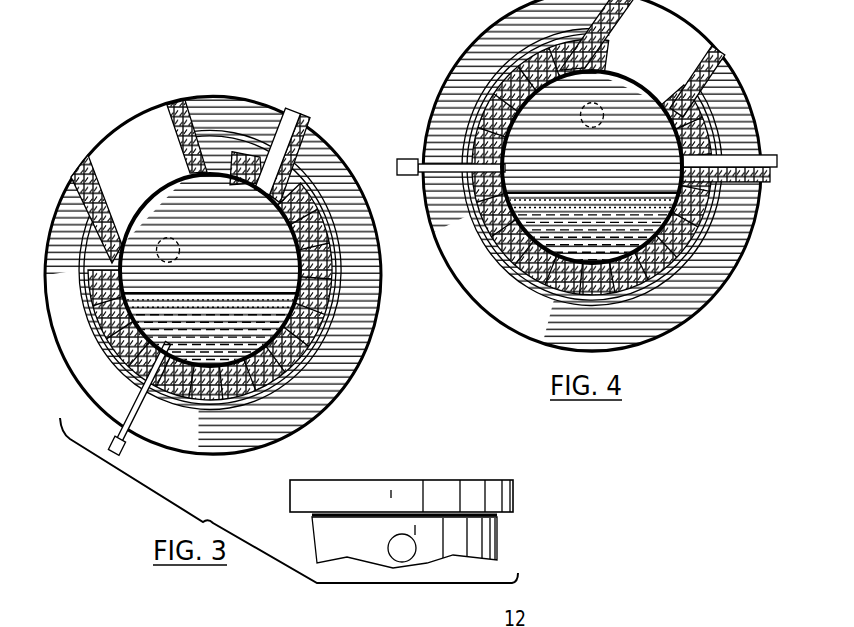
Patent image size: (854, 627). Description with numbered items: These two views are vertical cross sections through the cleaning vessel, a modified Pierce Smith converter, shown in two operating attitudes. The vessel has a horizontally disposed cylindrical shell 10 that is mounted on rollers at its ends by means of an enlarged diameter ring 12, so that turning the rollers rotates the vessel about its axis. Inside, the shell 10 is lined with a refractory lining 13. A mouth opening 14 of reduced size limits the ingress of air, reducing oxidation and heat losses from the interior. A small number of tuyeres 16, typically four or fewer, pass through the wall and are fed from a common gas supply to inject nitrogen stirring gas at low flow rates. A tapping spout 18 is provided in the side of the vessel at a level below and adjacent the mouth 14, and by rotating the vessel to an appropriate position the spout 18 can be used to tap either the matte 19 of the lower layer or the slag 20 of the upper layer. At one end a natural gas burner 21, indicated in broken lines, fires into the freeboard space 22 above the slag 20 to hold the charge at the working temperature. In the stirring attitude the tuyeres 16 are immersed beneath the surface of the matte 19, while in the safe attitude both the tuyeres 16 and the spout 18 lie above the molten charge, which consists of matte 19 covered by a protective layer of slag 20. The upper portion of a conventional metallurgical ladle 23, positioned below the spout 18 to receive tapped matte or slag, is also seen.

In FIG. 3, the cylindrical shell 10 is at (92, 318).
In FIG. 4, the cylindrical shell 10 is at (462, 130).
In FIG. 3, the enlarged diameter ring 12 is at (323, 372).
In FIG. 4, the enlarged diameter ring 12 is at (735, 233).
In FIG. 3, the refractory lining 13 is at (313, 313).
In FIG. 4, the refractory lining 13 is at (487, 110).
In FIG. 3, the mouth opening 14 is at (110, 180).
In FIG. 4, the mouth opening 14 is at (692, 67).
In FIG. 3, the tuyere 16 is at (160, 367).
In FIG. 4, the tuyere 16 is at (450, 172).
In FIG. 3, the tapping spout 18 is at (303, 142).
In FIG. 4, the tapping spout 18 is at (758, 161).
In FIG. 3, the matte 19 is at (240, 347).
In FIG. 4, the matte 19 is at (626, 240).
In FIG. 3, the slag 20 is at (165, 318).
In FIG. 4, the slag 20 is at (562, 212).
In FIG. 3, the natural gas burner 21 is at (170, 239).
In FIG. 4, the natural gas burner 21 is at (587, 125).
In FIG. 3, the freeboard space 22 is at (244, 241).
In FIG. 4, the freeboard space 22 is at (655, 138).
In FIG. 3, the metallurgical ladle 23 is at (433, 492).